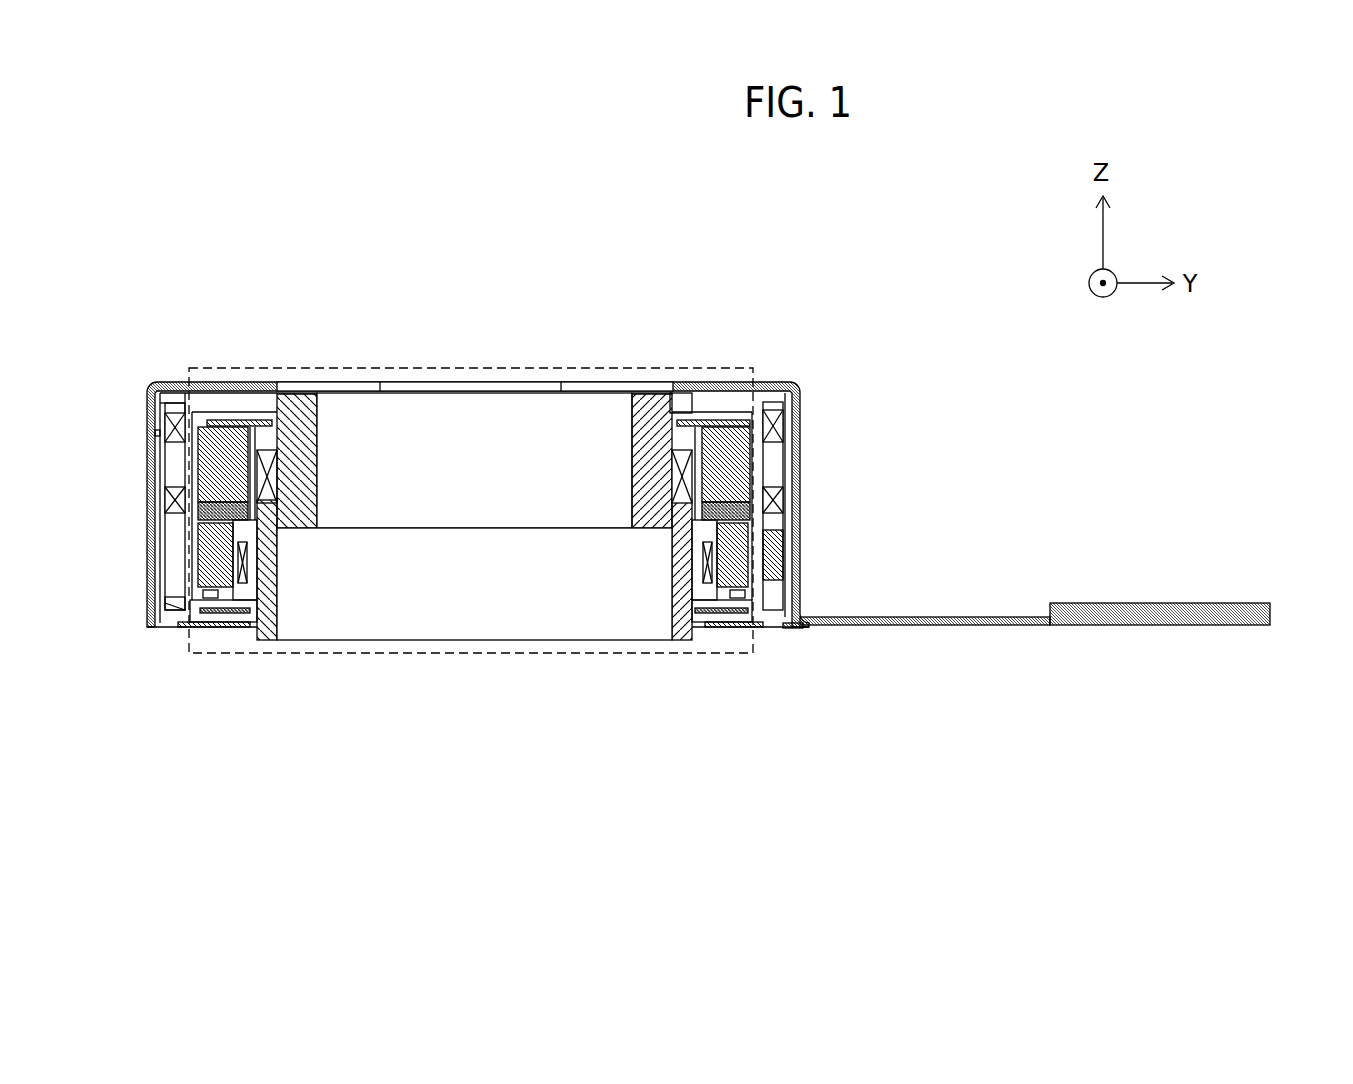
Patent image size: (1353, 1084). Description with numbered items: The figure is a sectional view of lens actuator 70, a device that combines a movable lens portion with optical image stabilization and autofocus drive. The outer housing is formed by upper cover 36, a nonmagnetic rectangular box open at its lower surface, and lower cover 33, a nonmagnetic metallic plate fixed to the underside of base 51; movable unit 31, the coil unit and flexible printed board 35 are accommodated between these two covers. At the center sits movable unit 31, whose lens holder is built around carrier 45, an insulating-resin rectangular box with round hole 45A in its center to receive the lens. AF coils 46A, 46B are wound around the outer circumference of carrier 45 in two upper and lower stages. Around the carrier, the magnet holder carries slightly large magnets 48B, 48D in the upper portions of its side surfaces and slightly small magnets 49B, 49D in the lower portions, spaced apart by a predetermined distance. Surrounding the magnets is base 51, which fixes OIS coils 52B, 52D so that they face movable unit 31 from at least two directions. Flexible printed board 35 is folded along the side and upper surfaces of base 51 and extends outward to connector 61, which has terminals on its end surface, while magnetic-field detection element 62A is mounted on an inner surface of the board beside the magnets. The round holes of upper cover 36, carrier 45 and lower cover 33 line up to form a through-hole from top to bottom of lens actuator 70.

The movable unit 31 is at (563, 655).
The lower cover 33 is at (730, 610).
The flexible printed board 35 is at (982, 623).
The upper cover 36 is at (700, 388).
The carrier 45 is at (640, 408).
The round hole 45A is at (542, 405).
The AF coil 46A is at (268, 456).
The AF coil 46B is at (268, 605).
The magnet 48B is at (745, 425).
The magnet 48D is at (225, 425).
The magnet 49B is at (740, 585).
The magnet 49D is at (208, 588).
The base 51 is at (178, 608).
The OIS coil 52B is at (780, 503).
The OIS coil 52D is at (173, 413).
The connector 61 is at (1147, 615).
The magnetic-field detection element 62A is at (808, 630).
The lens actuator 70 is at (915, 270).